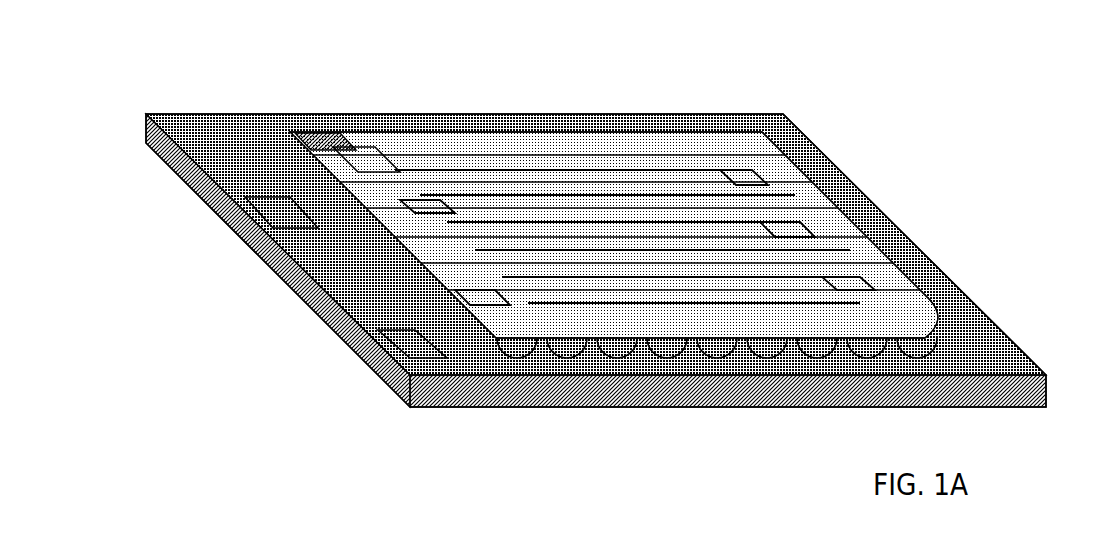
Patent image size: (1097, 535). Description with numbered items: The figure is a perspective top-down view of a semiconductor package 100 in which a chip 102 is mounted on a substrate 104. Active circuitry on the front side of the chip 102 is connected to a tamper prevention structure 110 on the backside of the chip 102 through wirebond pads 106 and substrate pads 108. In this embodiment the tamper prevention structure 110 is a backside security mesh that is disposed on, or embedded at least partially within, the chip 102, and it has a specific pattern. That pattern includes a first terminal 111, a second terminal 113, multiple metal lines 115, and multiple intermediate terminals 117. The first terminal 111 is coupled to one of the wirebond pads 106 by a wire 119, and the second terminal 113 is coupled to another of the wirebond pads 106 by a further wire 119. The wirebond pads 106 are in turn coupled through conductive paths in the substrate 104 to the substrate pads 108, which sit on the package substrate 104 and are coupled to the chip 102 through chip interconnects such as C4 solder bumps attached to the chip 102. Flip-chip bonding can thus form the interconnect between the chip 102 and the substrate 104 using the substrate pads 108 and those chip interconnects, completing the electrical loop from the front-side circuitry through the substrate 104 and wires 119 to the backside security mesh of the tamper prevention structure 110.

The semiconductor package 100 is at (141, 87).
The chip 102 is at (505, 140).
The substrate 104 is at (632, 122).
The wirebond pads 106 is at (262, 213).
The substrate pads 108 is at (557, 358).
The tamper prevention structure 110 is at (740, 175).
The first terminal 111 is at (377, 160).
The second terminal 113 is at (483, 303).
The metal lines 115 is at (685, 158).
The intermediate terminals 117 is at (813, 228).
The wire 119 is at (322, 172).